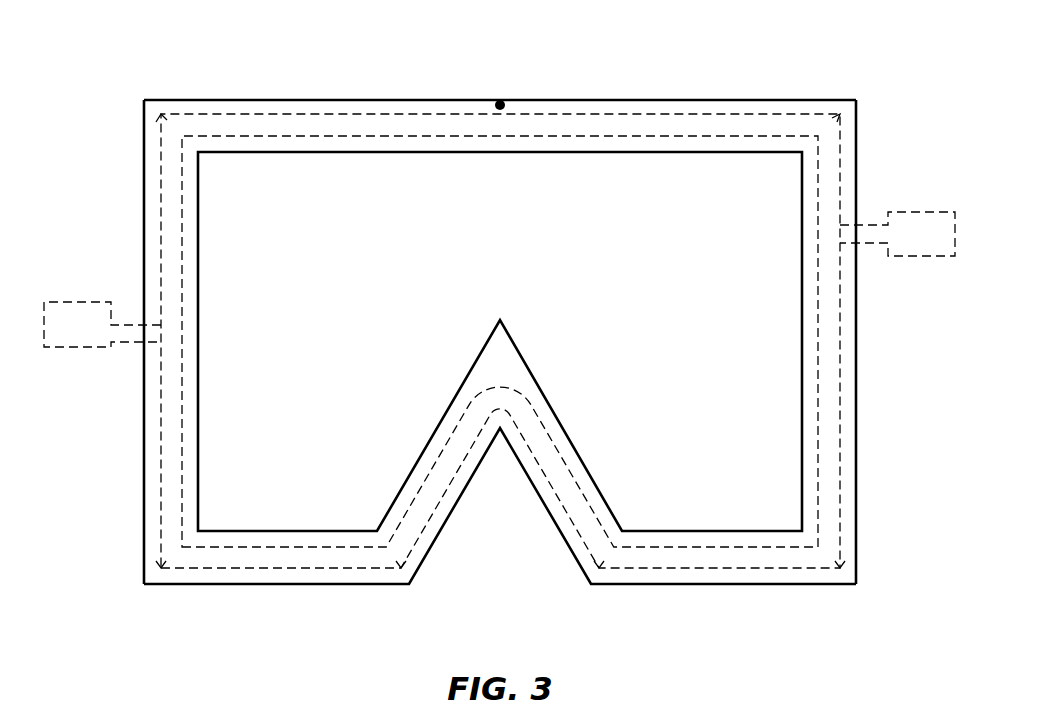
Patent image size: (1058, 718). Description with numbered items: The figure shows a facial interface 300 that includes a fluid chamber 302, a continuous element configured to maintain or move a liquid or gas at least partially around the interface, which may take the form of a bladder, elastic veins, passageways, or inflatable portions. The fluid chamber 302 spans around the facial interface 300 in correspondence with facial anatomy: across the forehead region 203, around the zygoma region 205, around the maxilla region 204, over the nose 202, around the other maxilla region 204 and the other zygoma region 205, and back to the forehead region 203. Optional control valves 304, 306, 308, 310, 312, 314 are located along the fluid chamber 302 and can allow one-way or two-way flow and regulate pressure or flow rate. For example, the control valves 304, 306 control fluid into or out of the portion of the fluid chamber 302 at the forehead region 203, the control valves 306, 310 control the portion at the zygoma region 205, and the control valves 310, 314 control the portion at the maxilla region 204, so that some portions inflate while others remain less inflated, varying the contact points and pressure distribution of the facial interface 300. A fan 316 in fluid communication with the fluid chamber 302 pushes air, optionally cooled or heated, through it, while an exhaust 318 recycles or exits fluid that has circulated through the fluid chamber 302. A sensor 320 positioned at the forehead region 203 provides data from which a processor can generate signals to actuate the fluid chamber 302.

The facial interface 300 is at (500, 333).
The nose 202 is at (569, 394).
The forehead region 203 is at (527, 63).
The maxilla region 204 is at (300, 593).
The zygoma region 205 is at (123, 412).
The fluid chamber 302 is at (679, 124).
The control valve 304 is at (176, 125).
The control valve 306 is at (817, 125).
The control valve 308 is at (172, 556).
The control valve 310 is at (822, 548).
The control valve 312 is at (378, 565).
The control valve 314 is at (607, 560).
The fan 316 is at (921, 212).
The exhaust 318 is at (80, 302).
The sensor 320 is at (497, 98).